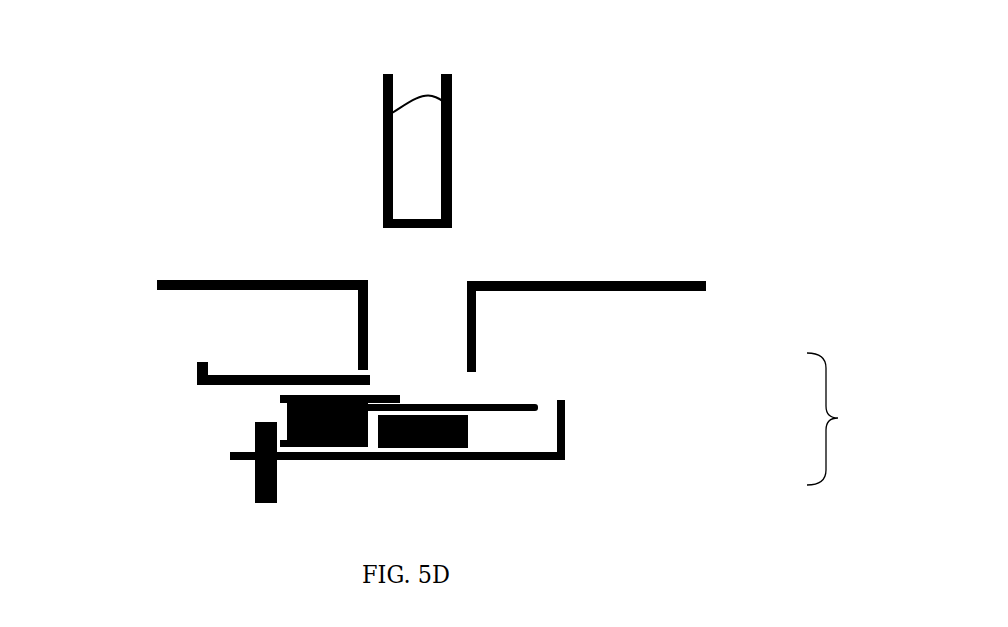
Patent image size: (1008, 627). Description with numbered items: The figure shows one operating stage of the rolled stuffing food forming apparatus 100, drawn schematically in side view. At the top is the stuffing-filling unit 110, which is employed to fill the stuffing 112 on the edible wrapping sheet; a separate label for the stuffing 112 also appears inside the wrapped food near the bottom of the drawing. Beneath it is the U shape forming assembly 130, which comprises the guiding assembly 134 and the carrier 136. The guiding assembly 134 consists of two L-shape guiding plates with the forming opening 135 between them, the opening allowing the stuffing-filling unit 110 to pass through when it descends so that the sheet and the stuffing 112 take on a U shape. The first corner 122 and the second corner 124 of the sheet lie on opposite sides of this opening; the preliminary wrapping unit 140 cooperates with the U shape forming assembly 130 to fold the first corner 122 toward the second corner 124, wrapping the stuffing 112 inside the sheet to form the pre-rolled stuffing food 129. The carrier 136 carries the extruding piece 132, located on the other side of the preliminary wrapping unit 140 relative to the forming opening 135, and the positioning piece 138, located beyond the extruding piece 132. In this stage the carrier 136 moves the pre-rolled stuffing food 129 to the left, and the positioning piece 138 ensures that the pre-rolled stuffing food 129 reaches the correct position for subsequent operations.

The rolled stuffing food forming apparatus 100 is at (148, 37).
The stuffing-filling unit 110 is at (470, 128).
The stuffing 112 is at (400, 130).
The first corner 122 is at (386, 389).
The second corner 124 is at (502, 393).
The pre-rolled stuffing food 129 is at (278, 398).
The U shape forming assembly 130 is at (856, 419).
The extruding piece 132 is at (442, 460).
The guiding assembly 134 is at (612, 297).
The forming opening 135 is at (432, 288).
The carrier 136 is at (585, 438).
The positioning piece 138 is at (245, 468).
The preliminary wrapping unit 140 is at (182, 378).